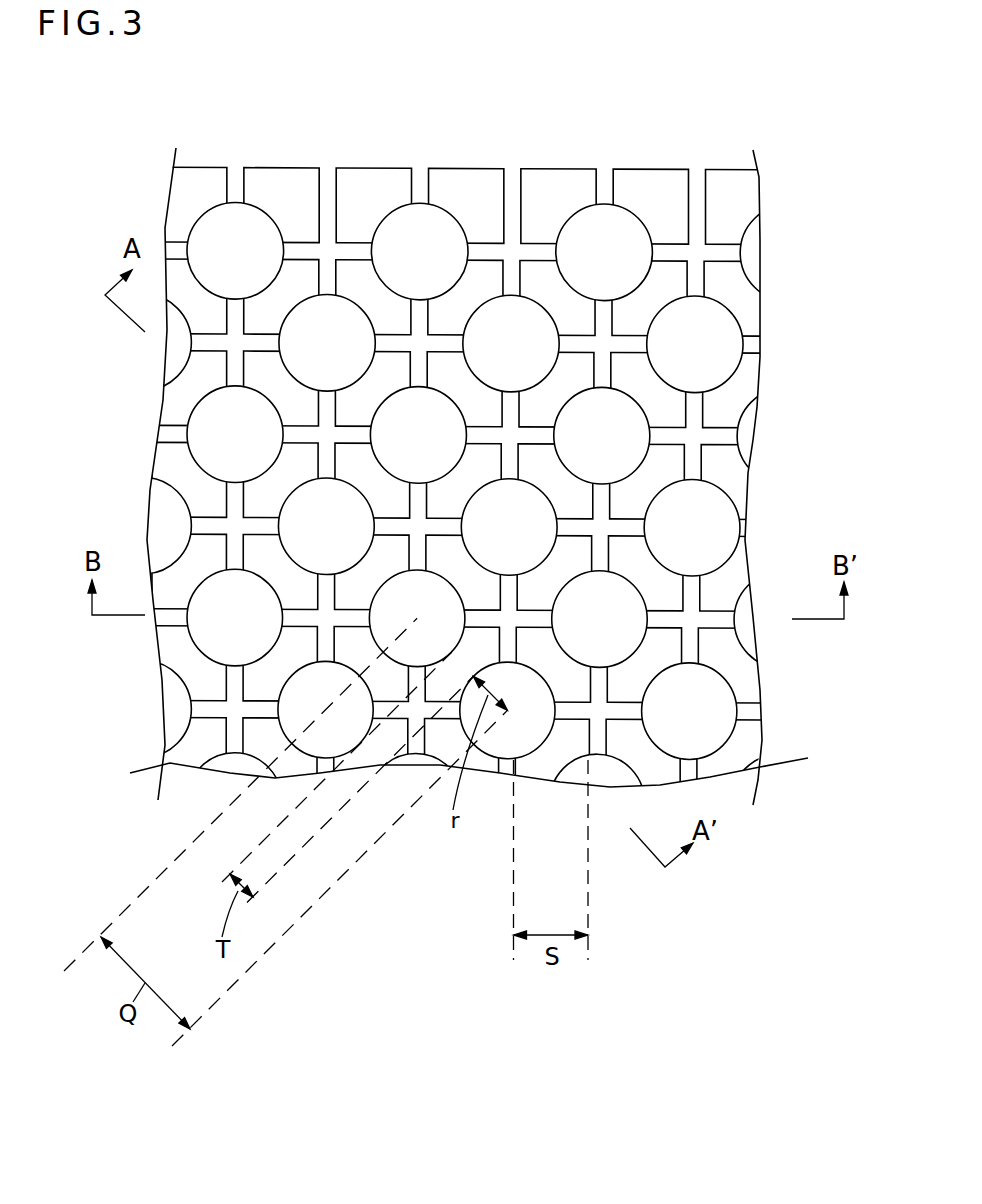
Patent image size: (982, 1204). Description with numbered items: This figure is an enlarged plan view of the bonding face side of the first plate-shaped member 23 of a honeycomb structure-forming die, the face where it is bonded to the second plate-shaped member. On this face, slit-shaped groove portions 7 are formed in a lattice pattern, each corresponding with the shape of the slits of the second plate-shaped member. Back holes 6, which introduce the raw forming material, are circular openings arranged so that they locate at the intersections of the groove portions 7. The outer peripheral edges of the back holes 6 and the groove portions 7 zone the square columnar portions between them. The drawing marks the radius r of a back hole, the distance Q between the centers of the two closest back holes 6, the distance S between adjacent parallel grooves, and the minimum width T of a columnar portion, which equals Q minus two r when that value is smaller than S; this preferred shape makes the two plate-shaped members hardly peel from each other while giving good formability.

The groove portion 7 is at (512, 210).
The back hole 6 is at (688, 330).
The first plate-shaped member 23 is at (665, 410).